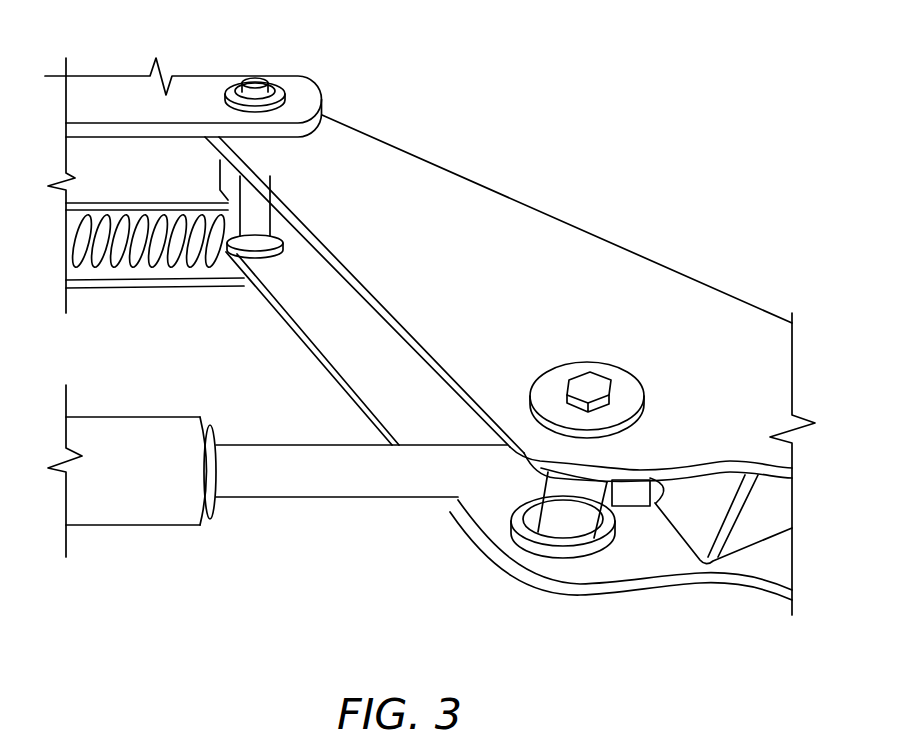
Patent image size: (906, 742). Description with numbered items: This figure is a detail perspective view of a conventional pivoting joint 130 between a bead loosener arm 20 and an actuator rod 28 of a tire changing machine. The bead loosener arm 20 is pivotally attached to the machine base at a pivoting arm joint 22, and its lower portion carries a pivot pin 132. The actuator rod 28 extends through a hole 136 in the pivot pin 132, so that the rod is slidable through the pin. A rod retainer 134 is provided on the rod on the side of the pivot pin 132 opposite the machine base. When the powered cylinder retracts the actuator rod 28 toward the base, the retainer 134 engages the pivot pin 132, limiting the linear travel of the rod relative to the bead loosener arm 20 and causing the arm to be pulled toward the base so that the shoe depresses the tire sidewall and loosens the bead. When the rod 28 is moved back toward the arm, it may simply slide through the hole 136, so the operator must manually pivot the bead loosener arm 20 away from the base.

The bead loosener arm 20 is at (595, 255).
The pivoting arm joint 22 is at (323, 97).
The actuator rod 28 is at (275, 485).
The pivoting joint 130 is at (495, 582).
The pivot pin 132 is at (572, 530).
The rod retainer 134 is at (633, 503).
The hole 136 is at (528, 512).